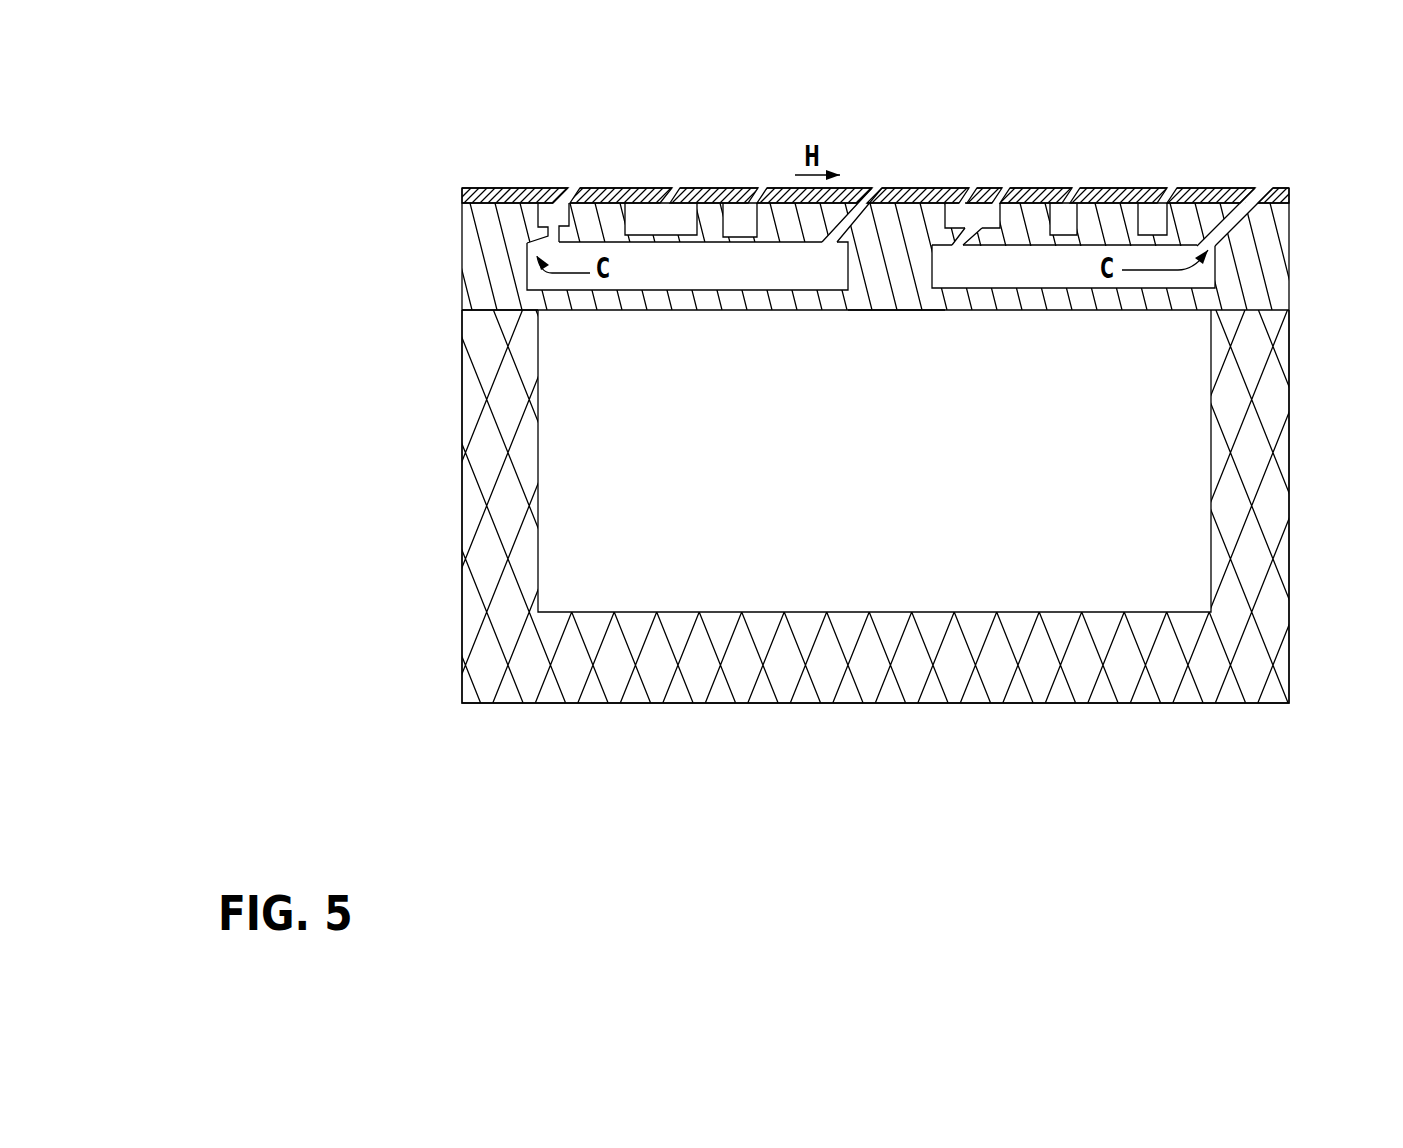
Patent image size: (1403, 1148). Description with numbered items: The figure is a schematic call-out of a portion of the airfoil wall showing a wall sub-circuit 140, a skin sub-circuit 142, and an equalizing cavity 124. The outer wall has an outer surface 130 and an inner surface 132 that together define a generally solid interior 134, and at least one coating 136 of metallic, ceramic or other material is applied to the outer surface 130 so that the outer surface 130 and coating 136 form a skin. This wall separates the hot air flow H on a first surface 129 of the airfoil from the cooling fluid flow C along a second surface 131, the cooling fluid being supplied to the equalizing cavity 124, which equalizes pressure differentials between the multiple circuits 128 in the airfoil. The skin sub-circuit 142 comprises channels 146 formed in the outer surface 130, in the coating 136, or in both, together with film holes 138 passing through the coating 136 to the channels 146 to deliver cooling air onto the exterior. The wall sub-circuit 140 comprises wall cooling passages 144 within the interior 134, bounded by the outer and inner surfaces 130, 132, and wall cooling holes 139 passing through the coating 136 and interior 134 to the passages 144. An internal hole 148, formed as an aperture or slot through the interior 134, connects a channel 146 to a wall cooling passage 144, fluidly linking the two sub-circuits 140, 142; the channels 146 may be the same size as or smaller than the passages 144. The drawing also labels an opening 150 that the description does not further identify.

The equalizing cavity 124 is at (880, 487).
The circuits 128 is at (451, 252).
The first surface 129 is at (788, 186).
The outer surface 130 is at (1287, 220).
The second surface 131 is at (698, 289).
The inner surface 132 is at (1290, 311).
The interior 134 is at (874, 279).
The coating 136 is at (1280, 190).
The film hole 138 is at (672, 182).
The wall cooling hole 139 is at (881, 188).
The wall sub-circuit 140 is at (511, 255).
The skin sub-circuit 142 is at (531, 216).
The wall cooling passage 144 is at (1200, 268).
The channel 146 is at (736, 218).
The internal hole 148 is at (545, 238).
The opening 150 is at (965, 217).